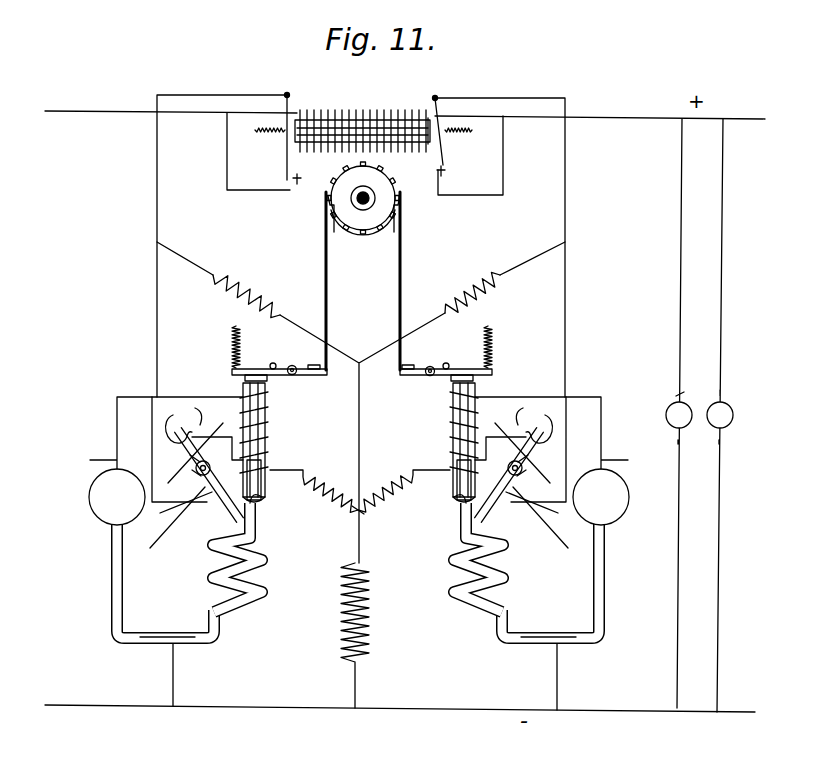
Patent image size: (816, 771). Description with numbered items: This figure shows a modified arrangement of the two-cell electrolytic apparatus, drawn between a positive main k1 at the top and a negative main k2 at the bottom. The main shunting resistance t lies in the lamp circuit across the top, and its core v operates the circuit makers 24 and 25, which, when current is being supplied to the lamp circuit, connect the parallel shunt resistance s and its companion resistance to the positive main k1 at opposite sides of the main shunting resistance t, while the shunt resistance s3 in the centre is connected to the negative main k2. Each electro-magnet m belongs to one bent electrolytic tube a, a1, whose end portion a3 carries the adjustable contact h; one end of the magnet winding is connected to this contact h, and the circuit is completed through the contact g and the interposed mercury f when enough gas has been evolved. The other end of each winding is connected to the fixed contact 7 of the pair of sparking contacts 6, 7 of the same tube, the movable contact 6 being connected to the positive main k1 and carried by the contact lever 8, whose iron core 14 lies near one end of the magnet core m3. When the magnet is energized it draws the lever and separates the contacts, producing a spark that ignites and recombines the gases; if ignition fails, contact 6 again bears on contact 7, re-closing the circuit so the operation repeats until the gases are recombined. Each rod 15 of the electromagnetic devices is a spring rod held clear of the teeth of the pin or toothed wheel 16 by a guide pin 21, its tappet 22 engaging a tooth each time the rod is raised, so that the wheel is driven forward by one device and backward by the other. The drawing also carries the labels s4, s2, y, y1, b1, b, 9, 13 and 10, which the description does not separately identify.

The positive main k1 is at (100, 113).
The negative main k2 is at (448, 710).
The main shunting resistance t is at (355, 118).
The core of the main shunting resistance v is at (418, 118).
The circuit maker 24 is at (282, 155).
The circuit maker 25 is at (448, 152).
The pin or toothed wheel 16 is at (374, 213).
The tappet 22 is at (329, 219).
The guide pin 21 is at (376, 236).
The rod 15 is at (332, 290).
The resistance s4 is at (246, 282).
The parallel shunt resistance s is at (472, 278).
The resistance junction s2 is at (360, 512).
The shunt resistance s3 is at (370, 590).
The resistance coil y is at (314, 478).
The resistance coil y1 is at (404, 477).
The electro-magnet m is at (268, 402).
The core of the magnet m3 is at (268, 462).
The pole piece b1 is at (268, 504).
The iron core 14 is at (258, 522).
The contact h is at (343, 435).
The end portion of the tube a3 is at (92, 497).
The bent electrolytic tube a1 is at (110, 582).
The bent electrolytic tube a is at (208, 607).
The mercury f is at (150, 643).
The contact g is at (174, 657).
The armature lever b is at (205, 505).
The spring 9 is at (359, 442).
The fixed contact 7 is at (357, 411).
The movable contact 6 is at (190, 458).
The contact lever 8 is at (192, 474).
The pivot 13 is at (360, 496).
The conductor 10 is at (352, 529).